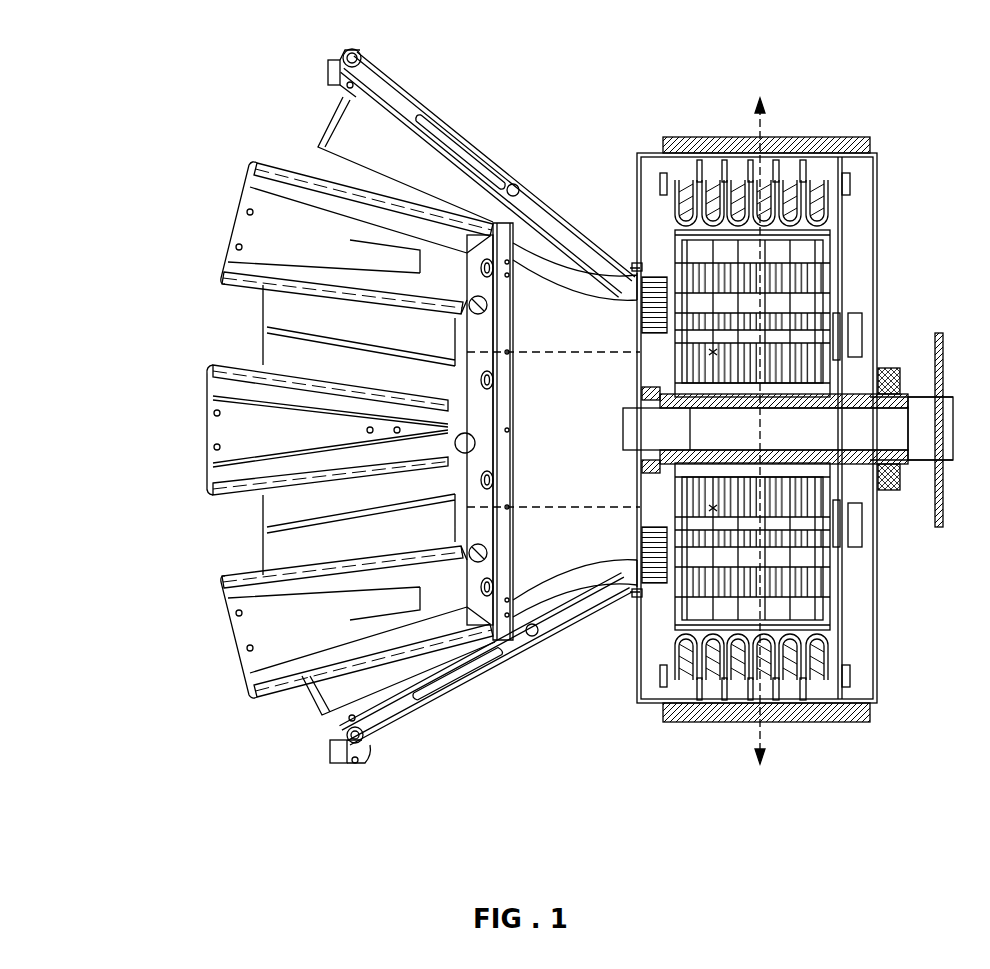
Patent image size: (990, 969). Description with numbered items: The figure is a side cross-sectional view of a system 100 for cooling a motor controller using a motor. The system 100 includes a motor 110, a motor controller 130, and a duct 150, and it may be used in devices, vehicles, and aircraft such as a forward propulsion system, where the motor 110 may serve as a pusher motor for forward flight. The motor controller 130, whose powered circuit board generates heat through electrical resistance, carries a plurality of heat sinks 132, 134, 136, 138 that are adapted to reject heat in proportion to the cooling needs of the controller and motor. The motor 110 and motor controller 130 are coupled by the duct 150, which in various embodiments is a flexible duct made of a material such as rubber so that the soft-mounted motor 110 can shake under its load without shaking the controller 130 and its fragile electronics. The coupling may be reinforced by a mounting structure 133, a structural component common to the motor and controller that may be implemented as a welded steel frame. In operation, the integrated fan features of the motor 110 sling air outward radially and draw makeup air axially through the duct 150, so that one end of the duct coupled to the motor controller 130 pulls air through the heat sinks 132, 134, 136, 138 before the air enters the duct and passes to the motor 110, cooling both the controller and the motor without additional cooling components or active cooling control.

The system 100 is at (201, 41).
The motor 110 is at (637, 650).
The motor controller 130 is at (207, 505).
The heat sink 132 is at (335, 168).
The mounting structure 133 is at (463, 140).
The heat sink 134 is at (280, 342).
The heat sink 136 is at (272, 500).
The heat sink 138 is at (327, 695).
The duct 150 is at (495, 620).